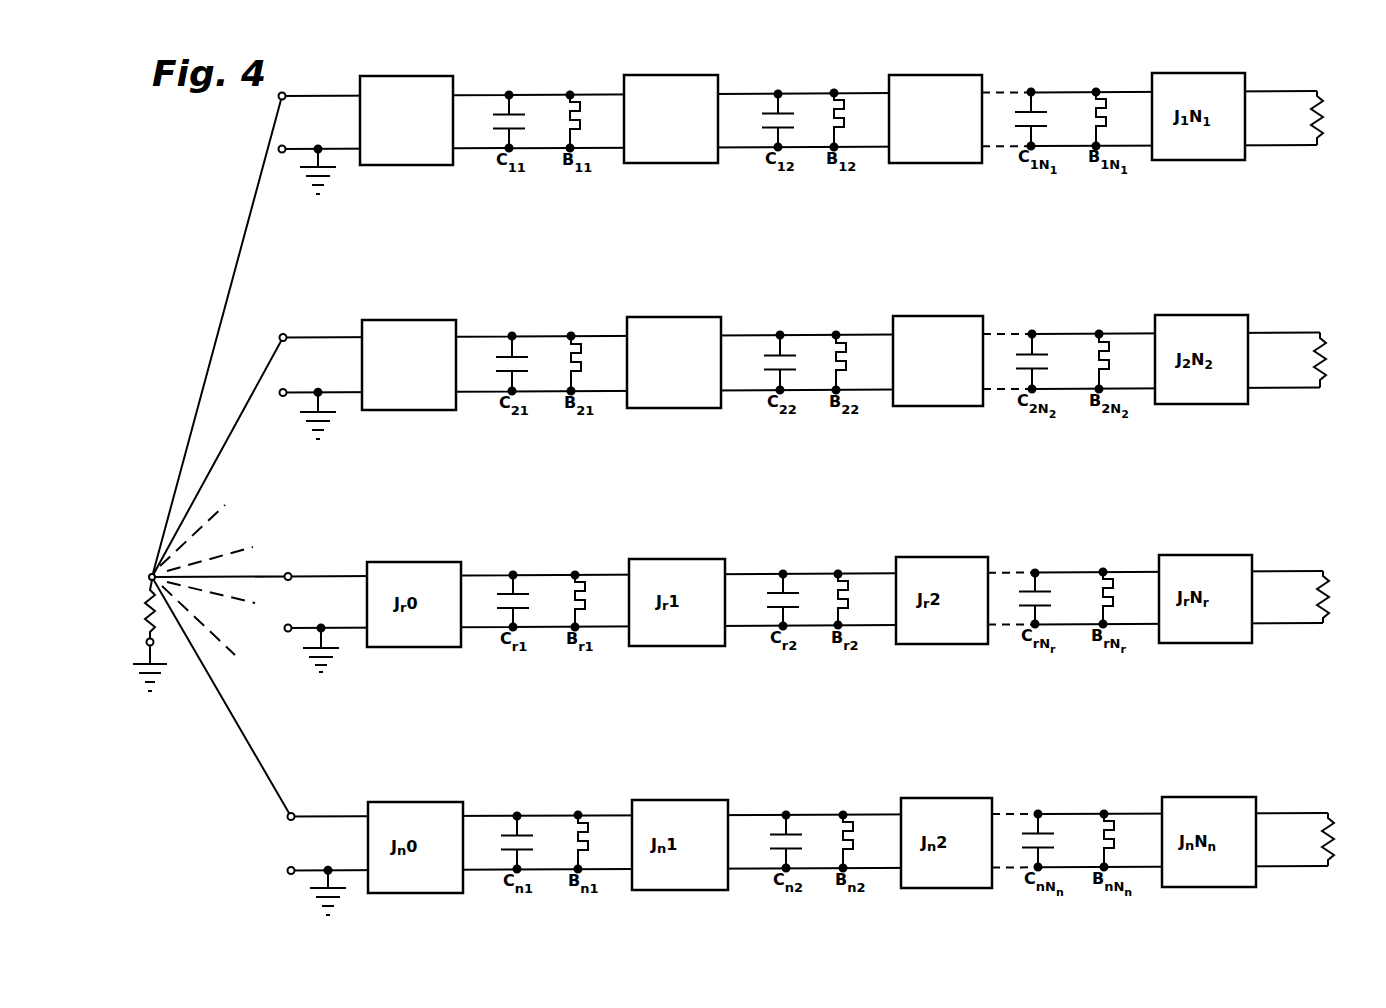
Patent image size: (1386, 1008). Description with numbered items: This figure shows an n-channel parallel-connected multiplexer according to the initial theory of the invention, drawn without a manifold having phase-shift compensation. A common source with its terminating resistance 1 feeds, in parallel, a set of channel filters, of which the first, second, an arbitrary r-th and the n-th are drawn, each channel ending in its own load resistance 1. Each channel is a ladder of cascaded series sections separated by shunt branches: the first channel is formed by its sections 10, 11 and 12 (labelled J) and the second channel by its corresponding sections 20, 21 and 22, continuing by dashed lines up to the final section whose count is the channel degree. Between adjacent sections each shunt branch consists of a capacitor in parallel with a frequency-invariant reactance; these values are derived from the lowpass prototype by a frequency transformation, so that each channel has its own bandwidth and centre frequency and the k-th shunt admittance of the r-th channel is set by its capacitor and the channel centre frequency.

The resistor (source/load impedance) 1 is at (738, 478).
The junction network J10 10 is at (406, 120).
The junction network J11 11 is at (671, 119).
The junction network J12 12 is at (935, 119).
The junction network J20 20 is at (409, 365).
The junction network J21 21 is at (674, 362).
The junction network J22 22 is at (938, 361).